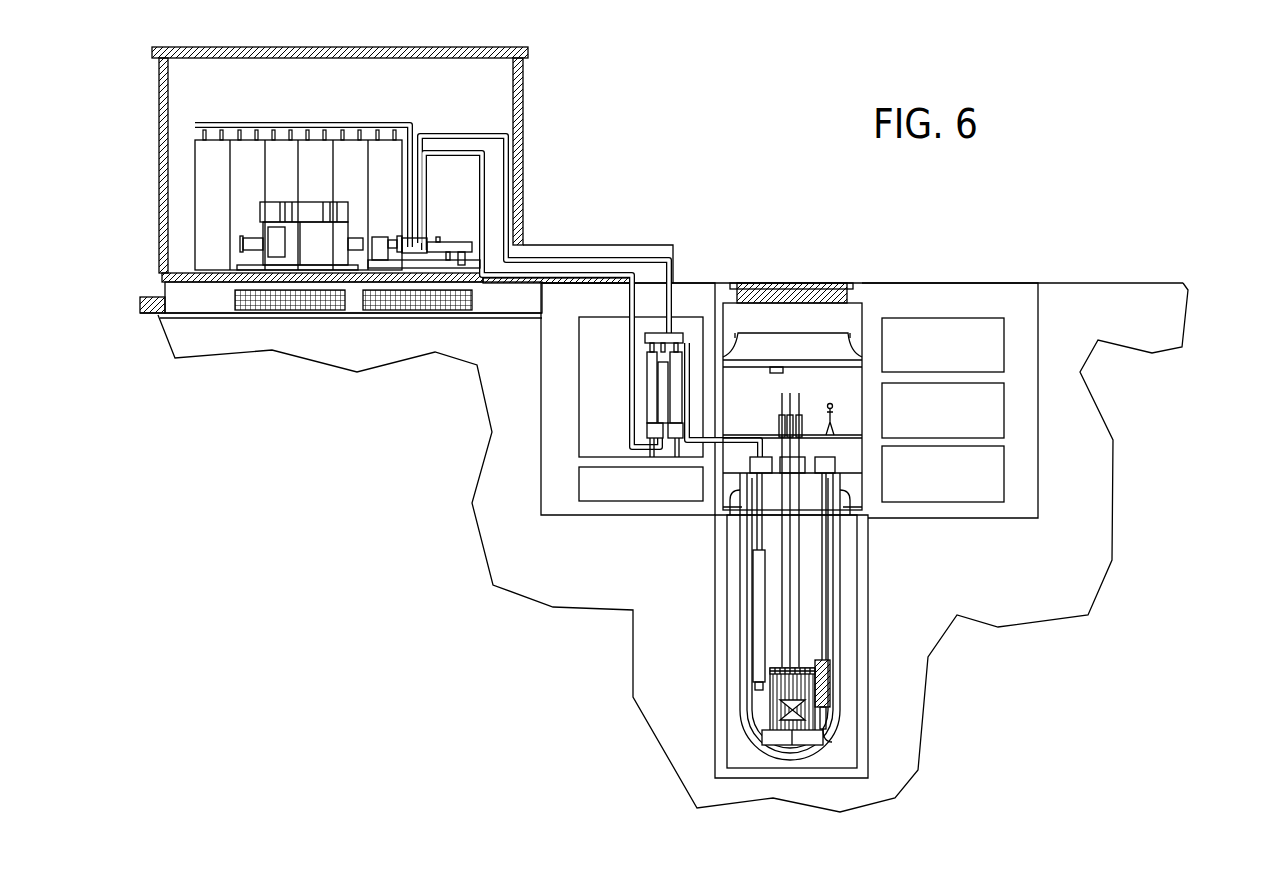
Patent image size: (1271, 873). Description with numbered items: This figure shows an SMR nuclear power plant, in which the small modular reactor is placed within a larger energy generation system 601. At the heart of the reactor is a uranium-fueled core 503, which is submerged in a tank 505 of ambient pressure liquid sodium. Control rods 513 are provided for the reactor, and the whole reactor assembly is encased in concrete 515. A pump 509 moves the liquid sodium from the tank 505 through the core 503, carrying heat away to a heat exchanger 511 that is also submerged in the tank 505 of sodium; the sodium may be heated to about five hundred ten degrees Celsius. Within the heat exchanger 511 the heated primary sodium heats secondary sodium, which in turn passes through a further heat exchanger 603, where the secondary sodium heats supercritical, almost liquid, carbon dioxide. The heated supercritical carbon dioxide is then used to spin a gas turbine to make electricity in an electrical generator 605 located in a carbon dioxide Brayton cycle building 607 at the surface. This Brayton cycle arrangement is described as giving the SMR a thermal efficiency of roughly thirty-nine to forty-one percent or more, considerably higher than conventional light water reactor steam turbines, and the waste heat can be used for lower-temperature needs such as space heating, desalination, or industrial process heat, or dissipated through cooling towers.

The energy generation system 601 is at (941, 199).
The carbon dioxide Brayton cycle building 607 is at (428, 55).
The electrical generator 605 is at (307, 210).
The heat exchanger 603 is at (663, 408).
The concrete 515 is at (1120, 297).
The control rods 513 is at (790, 422).
The heat exchanger 511 is at (757, 613).
The tank 505 is at (833, 588).
The pump 509 is at (827, 680).
The uranium-fueled core 503 is at (790, 703).